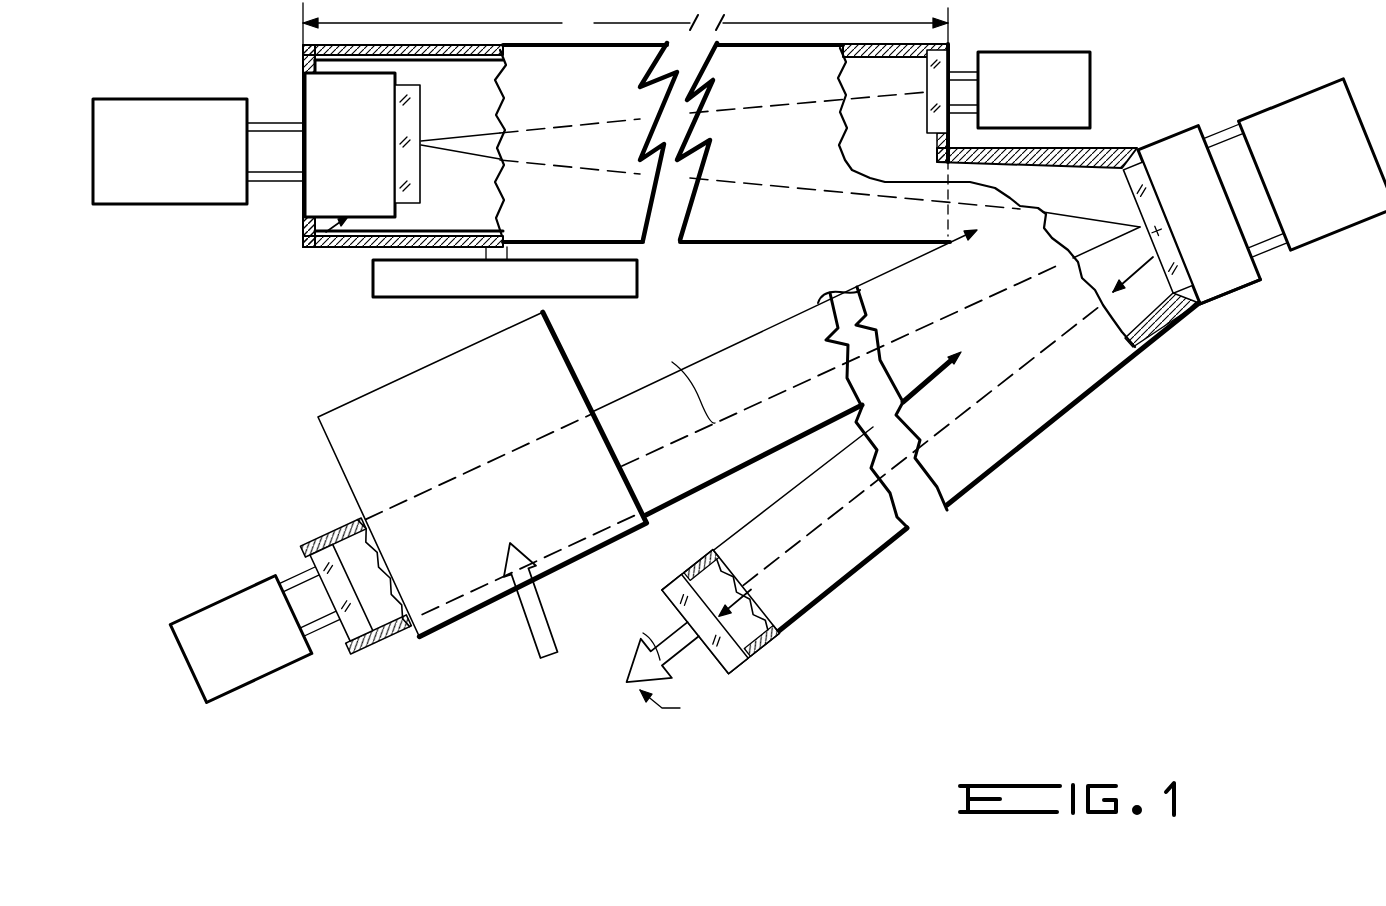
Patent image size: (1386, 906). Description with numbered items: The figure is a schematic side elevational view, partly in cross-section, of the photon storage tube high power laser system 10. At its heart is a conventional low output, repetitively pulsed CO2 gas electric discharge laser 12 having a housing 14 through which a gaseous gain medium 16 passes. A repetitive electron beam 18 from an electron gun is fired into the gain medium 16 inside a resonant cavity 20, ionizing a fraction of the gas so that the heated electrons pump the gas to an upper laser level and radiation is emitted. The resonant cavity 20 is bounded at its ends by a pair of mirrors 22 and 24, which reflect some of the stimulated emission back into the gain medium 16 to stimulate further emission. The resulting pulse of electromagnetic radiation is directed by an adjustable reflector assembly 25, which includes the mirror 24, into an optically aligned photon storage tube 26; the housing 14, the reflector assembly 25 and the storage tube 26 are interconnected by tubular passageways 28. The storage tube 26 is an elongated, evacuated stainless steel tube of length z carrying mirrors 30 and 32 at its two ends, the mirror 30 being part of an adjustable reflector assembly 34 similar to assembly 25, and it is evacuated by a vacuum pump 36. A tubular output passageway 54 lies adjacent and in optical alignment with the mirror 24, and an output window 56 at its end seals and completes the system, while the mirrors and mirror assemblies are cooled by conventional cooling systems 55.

The photon storage tube high power laser system 10 is at (739, 366).
The electric discharge laser 12 is at (467, 627).
The housing 14 is at (338, 462).
The gaseous gain medium 16 is at (519, 536).
The electron beam 18 is at (548, 660).
The resonant cavity 20 is at (705, 458).
The mirror 22 is at (354, 642).
The mirror 24 is at (1170, 296).
The adjustable reflector assembly 25 is at (1236, 302).
The photon storage tube 26 is at (640, 250).
The tubular passageways 28 is at (1100, 148).
The mirror 30 is at (421, 177).
The mirror 32 is at (927, 108).
The adjustable reflector assembly 34 is at (318, 247).
The vacuum pump 36 is at (392, 298).
The tubular output passageway 54 is at (870, 566).
The cooling systems 55 is at (136, 99).
The output window 56 is at (745, 648).